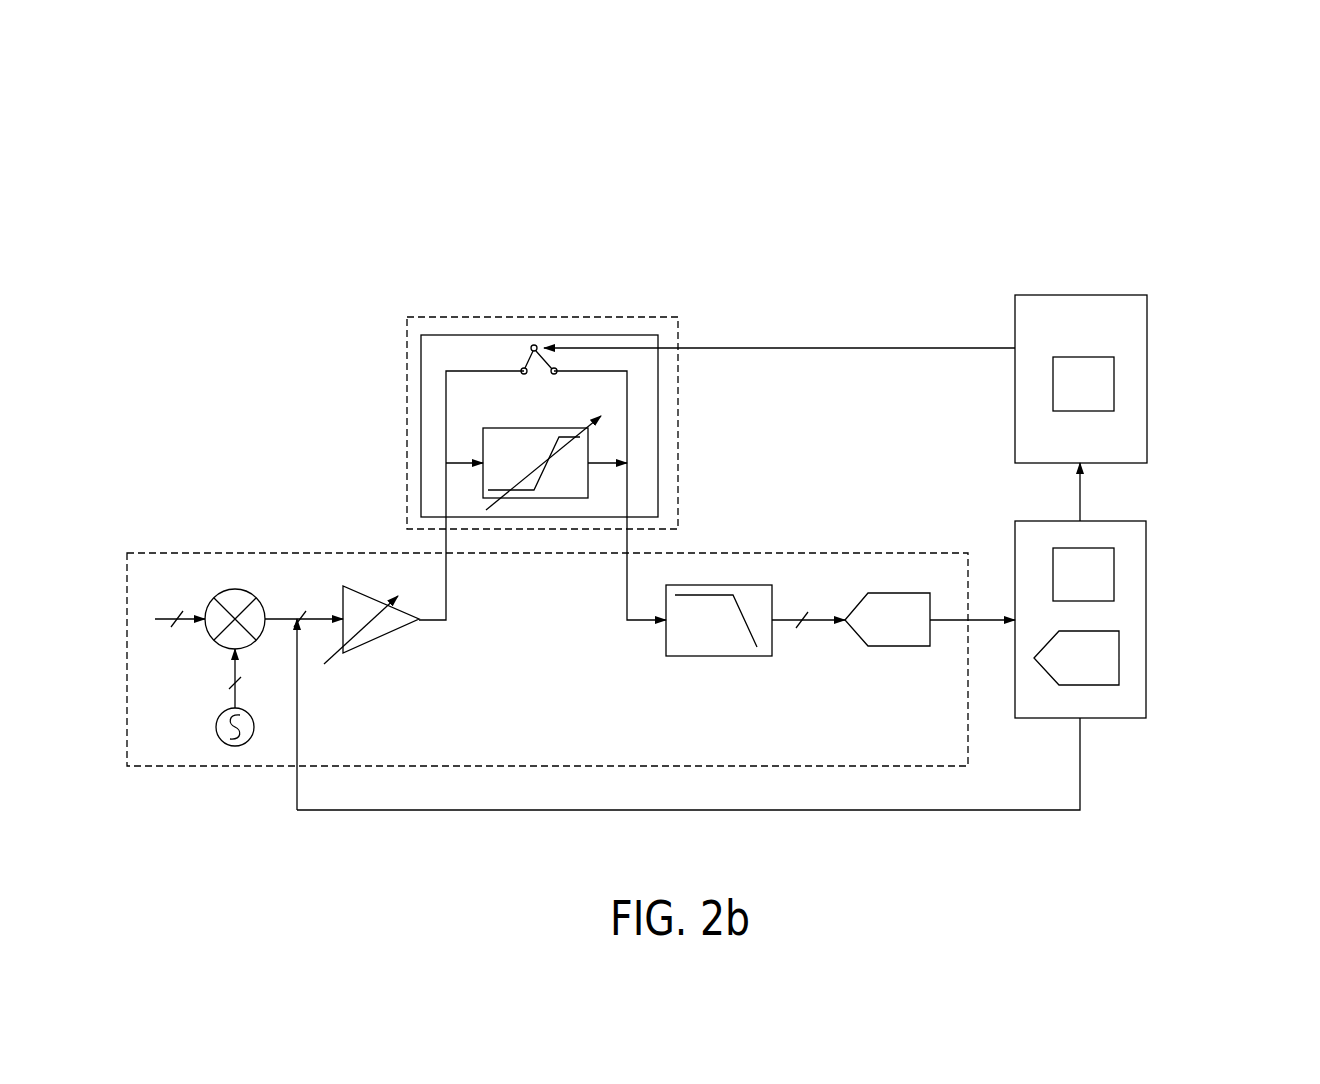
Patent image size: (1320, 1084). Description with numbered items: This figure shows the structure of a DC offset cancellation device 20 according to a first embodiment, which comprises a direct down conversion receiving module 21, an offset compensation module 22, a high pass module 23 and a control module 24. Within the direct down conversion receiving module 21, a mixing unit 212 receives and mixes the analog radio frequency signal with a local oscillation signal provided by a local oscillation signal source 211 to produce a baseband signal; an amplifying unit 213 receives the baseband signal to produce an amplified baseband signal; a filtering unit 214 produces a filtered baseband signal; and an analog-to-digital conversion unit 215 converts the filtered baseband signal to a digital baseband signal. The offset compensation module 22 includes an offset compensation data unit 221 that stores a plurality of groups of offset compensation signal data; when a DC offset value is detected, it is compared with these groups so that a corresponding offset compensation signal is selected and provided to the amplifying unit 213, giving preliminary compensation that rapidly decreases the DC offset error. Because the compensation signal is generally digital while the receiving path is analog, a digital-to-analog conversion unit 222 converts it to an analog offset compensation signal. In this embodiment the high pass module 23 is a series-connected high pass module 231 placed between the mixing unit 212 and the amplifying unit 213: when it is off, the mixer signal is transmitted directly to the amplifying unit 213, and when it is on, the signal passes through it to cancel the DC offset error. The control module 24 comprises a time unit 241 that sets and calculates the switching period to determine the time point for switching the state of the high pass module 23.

The DC offset cancellation device 20 is at (852, 252).
The direct down conversion receiving module 21 is at (228, 553).
The local oscillation signal source 211 is at (216, 728).
The mixing unit 212 is at (230, 589).
The amplifying unit 213 is at (383, 640).
The filtering unit 214 is at (718, 656).
The analog-to-digital conversion unit 215 is at (898, 646).
The offset compensation module 22 is at (1146, 532).
The offset compensation data unit 221 is at (1114, 572).
The digital-to-analog conversion unit 222 is at (1119, 655).
The high pass module 23 is at (594, 317).
The series-connected high pass module 231 is at (468, 335).
The control module 24 is at (1147, 318).
The time unit 241 is at (1114, 380).